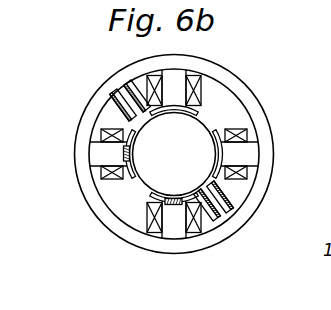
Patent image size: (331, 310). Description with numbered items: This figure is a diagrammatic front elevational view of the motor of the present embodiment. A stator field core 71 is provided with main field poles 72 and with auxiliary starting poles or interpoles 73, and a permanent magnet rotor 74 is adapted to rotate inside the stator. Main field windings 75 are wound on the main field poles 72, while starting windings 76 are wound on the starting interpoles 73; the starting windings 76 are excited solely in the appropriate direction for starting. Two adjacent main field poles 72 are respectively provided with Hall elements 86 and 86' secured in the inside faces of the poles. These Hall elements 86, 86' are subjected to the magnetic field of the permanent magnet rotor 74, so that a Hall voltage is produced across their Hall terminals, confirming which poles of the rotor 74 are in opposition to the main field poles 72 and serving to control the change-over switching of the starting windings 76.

The stator field core 71 is at (233, 76).
The main field pole 72 is at (245, 155).
The auxiliary starting pole (interpole) 73 is at (229, 211).
The permanent magnet rotor 74 is at (147, 177).
The main field winding 75 is at (240, 182).
The starting winding 76 is at (216, 219).
The Hall element 86 is at (84, 136).
The Hall element 86' is at (173, 241).